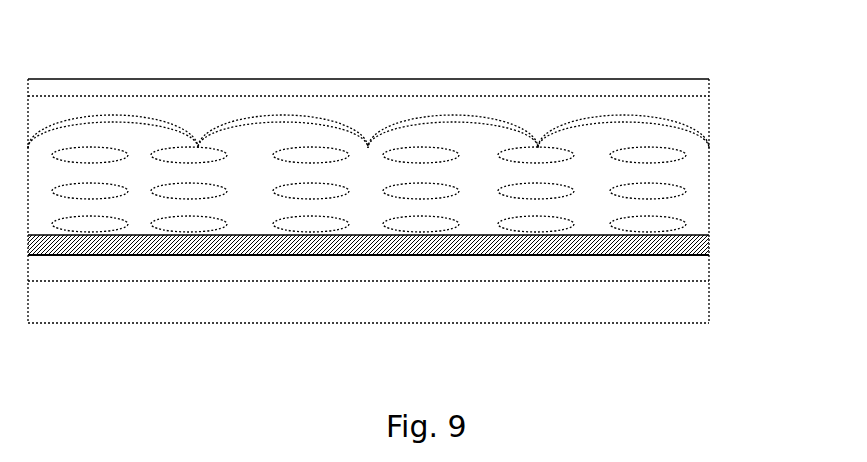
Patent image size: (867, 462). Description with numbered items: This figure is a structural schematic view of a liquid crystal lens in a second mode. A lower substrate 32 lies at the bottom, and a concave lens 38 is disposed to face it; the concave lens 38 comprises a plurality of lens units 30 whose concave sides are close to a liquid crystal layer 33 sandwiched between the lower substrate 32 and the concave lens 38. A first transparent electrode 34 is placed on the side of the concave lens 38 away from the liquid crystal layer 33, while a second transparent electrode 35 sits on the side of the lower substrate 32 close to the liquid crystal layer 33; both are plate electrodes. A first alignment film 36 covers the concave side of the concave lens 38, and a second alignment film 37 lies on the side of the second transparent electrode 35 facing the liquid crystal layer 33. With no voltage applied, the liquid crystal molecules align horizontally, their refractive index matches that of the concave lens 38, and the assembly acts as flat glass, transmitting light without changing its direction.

The lens units 30 is at (107, 137).
The lower substrate 32 is at (709, 307).
The liquid crystal layer 33 is at (678, 193).
The first transparent electrode 34 is at (578, 88).
The second transparent electrode 35 is at (547, 274).
The first alignment film 36 is at (706, 142).
The second alignment film 37 is at (768, 281).
The concave lens 38 is at (698, 112).